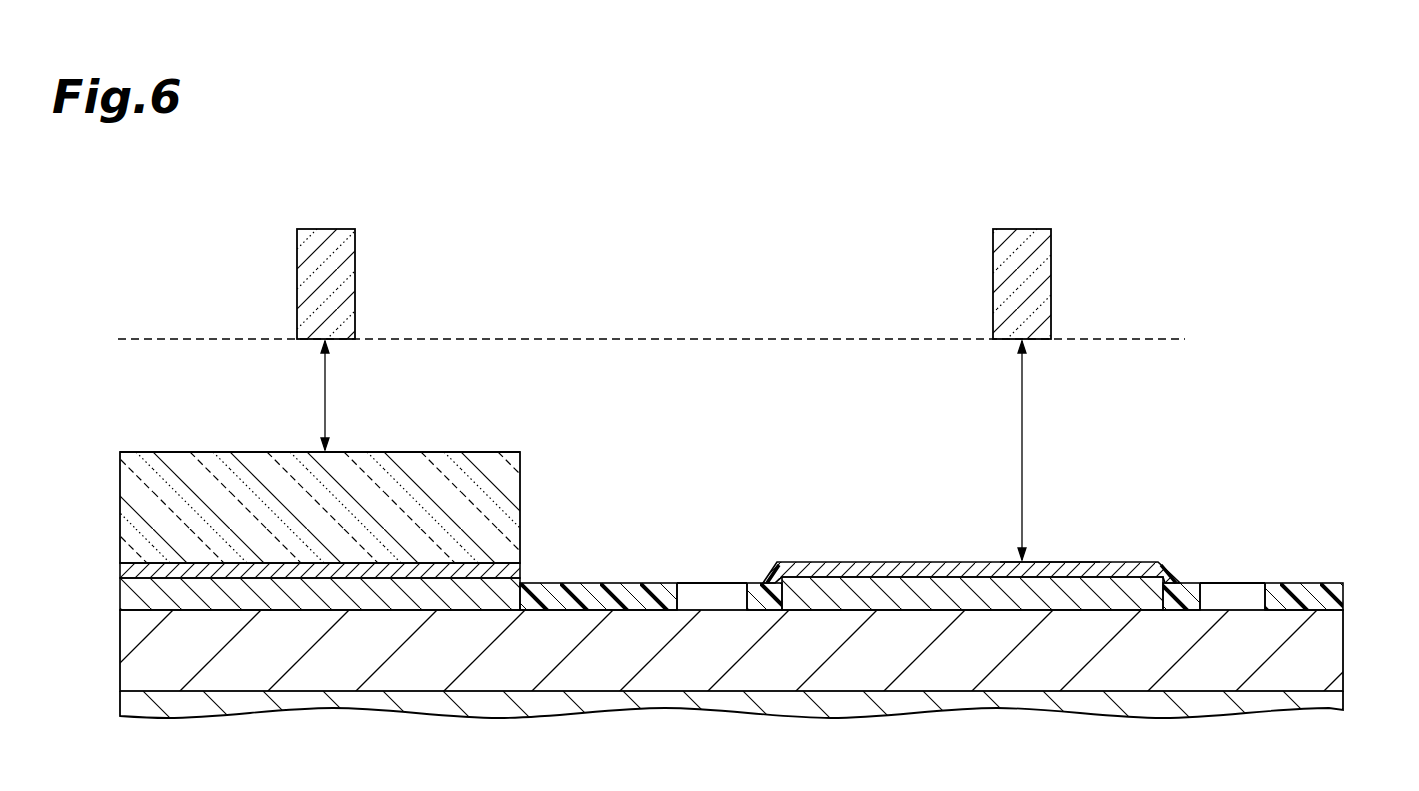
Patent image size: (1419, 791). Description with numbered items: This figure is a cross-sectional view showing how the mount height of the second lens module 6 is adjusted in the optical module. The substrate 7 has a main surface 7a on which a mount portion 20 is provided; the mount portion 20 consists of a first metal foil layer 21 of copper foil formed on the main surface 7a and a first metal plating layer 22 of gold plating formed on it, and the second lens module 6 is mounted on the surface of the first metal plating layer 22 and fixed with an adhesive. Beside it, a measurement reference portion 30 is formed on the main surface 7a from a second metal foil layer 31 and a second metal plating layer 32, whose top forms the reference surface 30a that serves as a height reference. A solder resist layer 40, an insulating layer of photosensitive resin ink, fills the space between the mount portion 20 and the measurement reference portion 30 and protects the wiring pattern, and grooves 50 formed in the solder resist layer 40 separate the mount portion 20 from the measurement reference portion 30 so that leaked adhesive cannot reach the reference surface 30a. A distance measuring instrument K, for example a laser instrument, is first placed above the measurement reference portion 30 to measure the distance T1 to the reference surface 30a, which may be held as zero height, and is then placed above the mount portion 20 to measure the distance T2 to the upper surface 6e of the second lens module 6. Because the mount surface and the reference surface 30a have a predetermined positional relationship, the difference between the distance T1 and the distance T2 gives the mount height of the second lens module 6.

The second lens module 6 is at (351, 473).
The upper surface of second lens module 6e is at (486, 452).
The substrate 7 is at (1343, 648).
The main surface of substrate 7a is at (1318, 600).
The mount portion 20 is at (451, 549).
The first metal foil layer 21 is at (526, 583).
The first metal plating layer 22 is at (521, 562).
The measurement reference portion 30 is at (982, 532).
The reference surface 30a is at (1048, 562).
The second metal foil layer 31 is at (1160, 581).
The second metal plating layer 32 is at (1108, 569).
The solder resist layer 40 is at (1297, 583).
The groove 50 is at (712, 583).
The distance measuring instrument K is at (357, 268).
The distance T1 is at (1040, 450).
The distance T2 is at (344, 395).